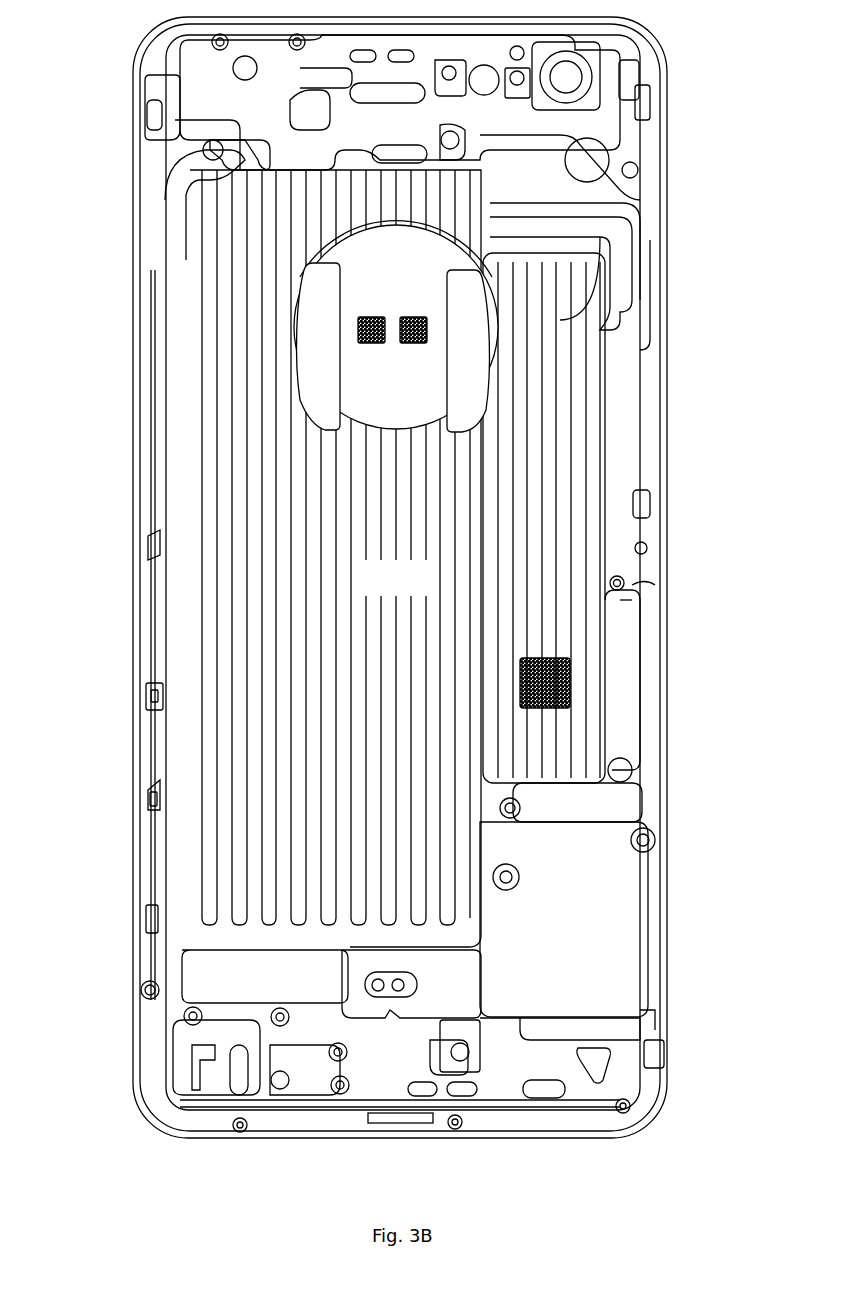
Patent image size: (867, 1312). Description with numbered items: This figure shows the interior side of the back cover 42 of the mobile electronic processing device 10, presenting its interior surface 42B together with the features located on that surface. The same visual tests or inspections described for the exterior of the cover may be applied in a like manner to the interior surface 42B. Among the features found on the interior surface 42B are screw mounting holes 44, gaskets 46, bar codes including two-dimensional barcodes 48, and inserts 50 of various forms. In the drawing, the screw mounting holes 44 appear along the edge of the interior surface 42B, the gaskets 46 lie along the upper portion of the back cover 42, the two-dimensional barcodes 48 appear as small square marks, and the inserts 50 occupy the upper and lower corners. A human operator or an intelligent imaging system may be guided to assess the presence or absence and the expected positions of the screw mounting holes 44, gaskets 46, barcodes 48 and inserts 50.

The mobile electronic processing device 10 is at (700, 290).
The back cover 42 is at (668, 467).
The interior surface 42B is at (415, 558).
The screw mounting holes 44 is at (626, 579).
The gaskets 46 is at (377, 155).
The 2D barcodes 48 is at (399, 344).
The inserts 50 is at (242, 157).